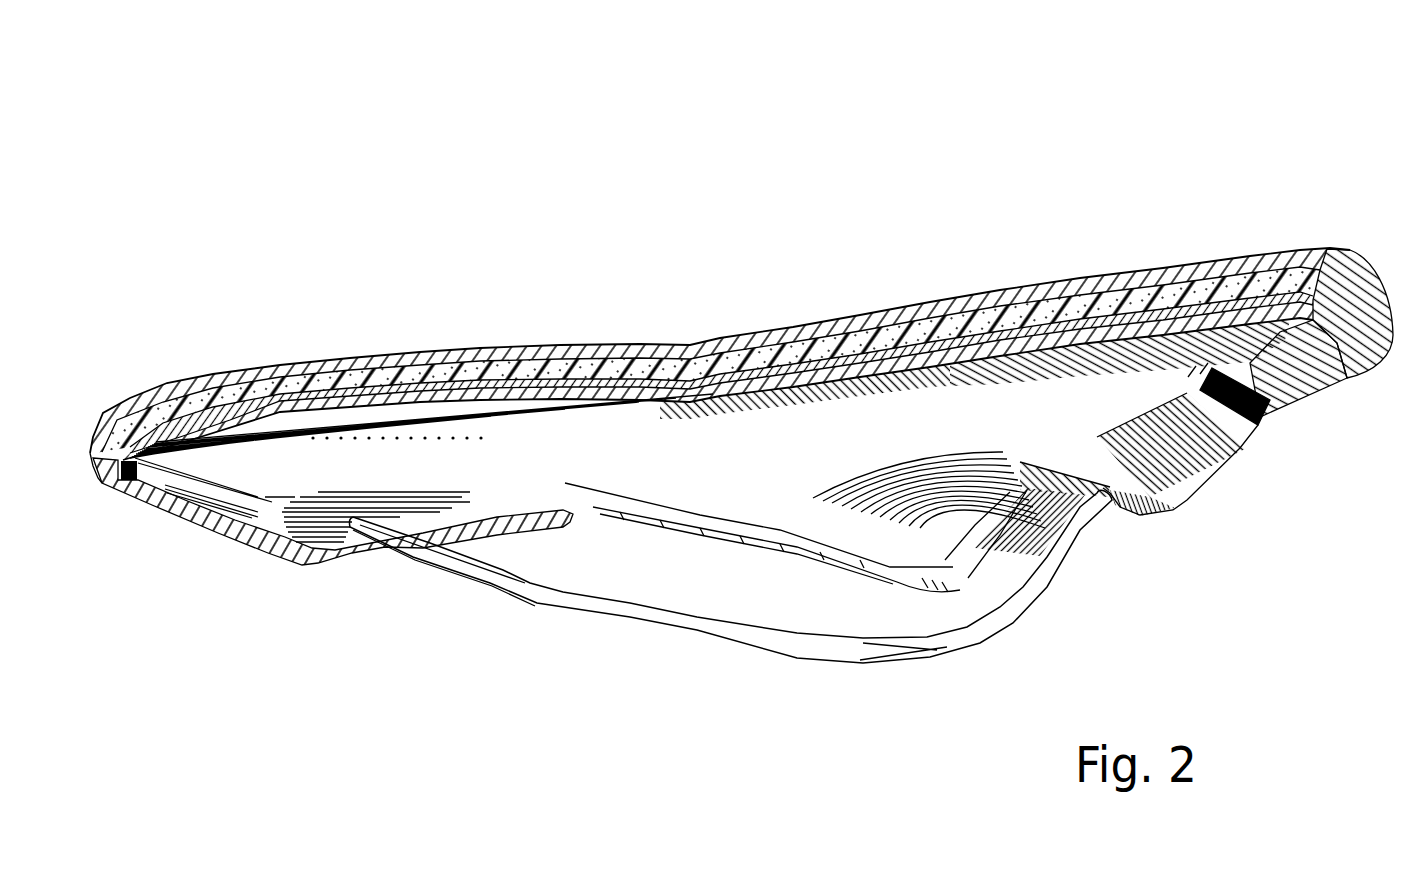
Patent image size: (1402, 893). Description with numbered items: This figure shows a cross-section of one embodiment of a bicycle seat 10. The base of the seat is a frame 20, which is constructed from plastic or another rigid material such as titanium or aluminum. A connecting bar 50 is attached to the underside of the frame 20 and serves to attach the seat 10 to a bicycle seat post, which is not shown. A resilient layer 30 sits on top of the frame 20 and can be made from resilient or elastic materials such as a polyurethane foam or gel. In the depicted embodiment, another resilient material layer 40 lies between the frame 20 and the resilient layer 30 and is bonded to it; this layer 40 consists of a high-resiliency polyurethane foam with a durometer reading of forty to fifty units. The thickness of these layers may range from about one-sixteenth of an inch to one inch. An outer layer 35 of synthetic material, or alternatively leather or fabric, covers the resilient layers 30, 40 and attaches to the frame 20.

The seat 10 is at (990, 196).
The frame 20 is at (205, 534).
The resilient layer 30 is at (698, 388).
The outer layer 35 is at (793, 326).
The resilient material layer 40 is at (1206, 382).
The connecting bar 50 is at (706, 645).